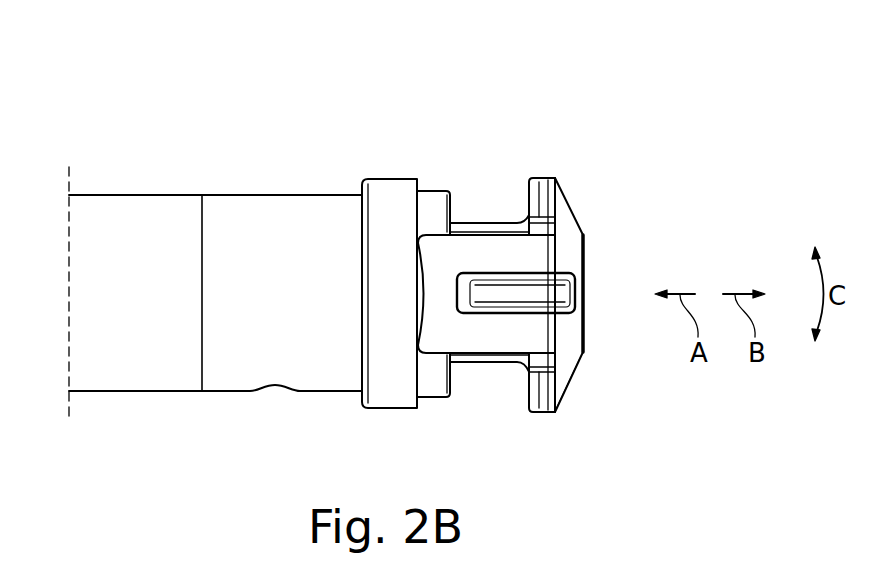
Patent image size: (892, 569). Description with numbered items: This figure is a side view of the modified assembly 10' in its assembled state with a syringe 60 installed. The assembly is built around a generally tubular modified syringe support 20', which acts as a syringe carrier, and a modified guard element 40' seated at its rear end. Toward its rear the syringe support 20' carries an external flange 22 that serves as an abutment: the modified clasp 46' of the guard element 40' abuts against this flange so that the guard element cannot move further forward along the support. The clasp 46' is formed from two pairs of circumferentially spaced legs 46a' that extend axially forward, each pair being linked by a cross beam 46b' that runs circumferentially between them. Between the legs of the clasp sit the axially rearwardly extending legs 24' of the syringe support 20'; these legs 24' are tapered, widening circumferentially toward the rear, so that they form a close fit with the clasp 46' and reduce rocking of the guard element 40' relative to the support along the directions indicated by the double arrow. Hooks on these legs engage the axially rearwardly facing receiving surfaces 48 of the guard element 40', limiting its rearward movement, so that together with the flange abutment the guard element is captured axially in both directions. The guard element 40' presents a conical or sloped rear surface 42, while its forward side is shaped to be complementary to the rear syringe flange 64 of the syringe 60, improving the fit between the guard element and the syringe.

The modified assembly 10' is at (458, 218).
The modified syringe support 20' is at (215, 262).
The external flange 22 is at (390, 398).
The axially rearwardly extending legs 24' is at (566, 304).
The modified guard element 40' is at (626, 295).
The sloped rear surface 42 is at (565, 369).
The modified clasp 46' is at (502, 342).
The circumferentially spaced legs 46a' is at (526, 296).
The cross beam 46b' is at (440, 234).
The axially rearwardly facing receiving surfaces 48 is at (557, 272).
The syringe 60 is at (465, 212).
The rear syringe flange 64 is at (540, 193).